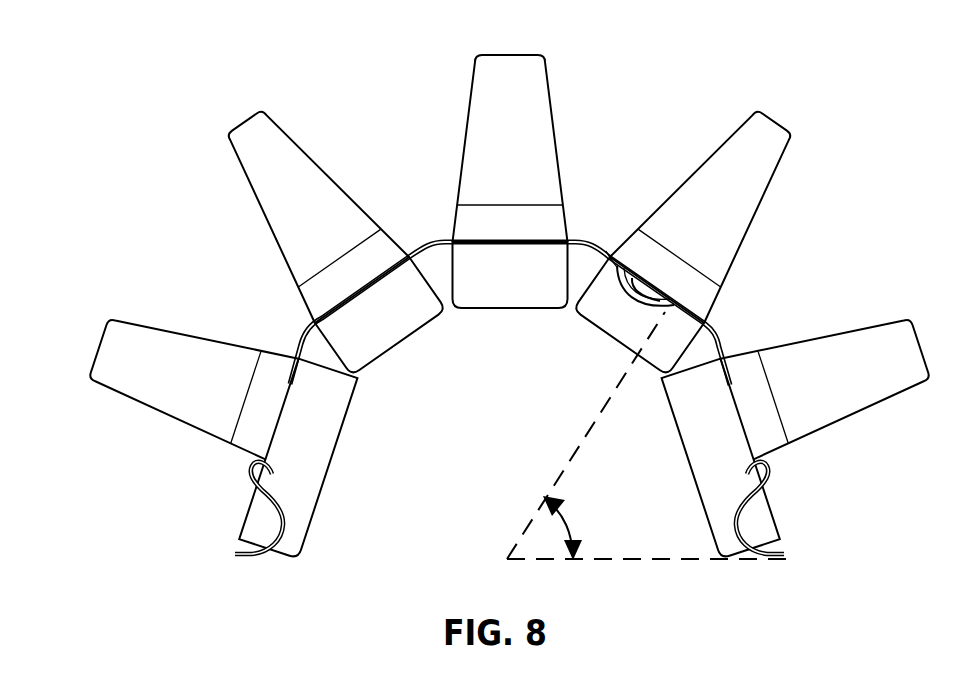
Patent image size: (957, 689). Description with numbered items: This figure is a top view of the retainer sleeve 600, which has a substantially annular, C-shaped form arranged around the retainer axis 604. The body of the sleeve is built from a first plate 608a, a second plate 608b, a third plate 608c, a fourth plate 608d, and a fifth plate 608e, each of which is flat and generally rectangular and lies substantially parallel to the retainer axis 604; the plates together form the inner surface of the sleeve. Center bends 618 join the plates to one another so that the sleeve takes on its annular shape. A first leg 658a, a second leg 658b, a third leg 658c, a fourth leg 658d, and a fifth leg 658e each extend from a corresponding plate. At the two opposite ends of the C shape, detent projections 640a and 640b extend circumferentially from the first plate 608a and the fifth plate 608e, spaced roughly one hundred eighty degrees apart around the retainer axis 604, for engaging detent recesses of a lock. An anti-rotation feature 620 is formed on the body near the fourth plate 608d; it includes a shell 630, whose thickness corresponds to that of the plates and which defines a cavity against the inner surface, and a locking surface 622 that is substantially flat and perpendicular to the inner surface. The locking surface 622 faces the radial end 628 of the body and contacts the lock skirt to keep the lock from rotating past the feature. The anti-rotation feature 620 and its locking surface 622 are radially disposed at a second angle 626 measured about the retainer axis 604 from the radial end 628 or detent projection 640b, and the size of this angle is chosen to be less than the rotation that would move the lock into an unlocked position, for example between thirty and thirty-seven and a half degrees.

The retainer sleeve 600 is at (186, 90).
The retainer axis 604 is at (506, 559).
The first plate 608a is at (282, 412).
The second plate 608b is at (367, 293).
The third plate 608c is at (498, 246).
The fourth plate 608d is at (650, 373).
The fifth plate 608e is at (740, 413).
The center bend 618 is at (295, 334).
The anti-rotation feature 620 is at (623, 294).
The locking surface 622 is at (688, 300).
The second angle 626 is at (568, 526).
The radial end 628 is at (783, 563).
The shell 630 is at (618, 268).
The detent projection 640a is at (247, 560).
The detent projection 640b is at (768, 545).
The first leg 658a is at (173, 340).
The second leg 658b is at (318, 173).
The third leg 658c is at (552, 122).
The fourth leg 658d is at (742, 209).
The fifth leg 658e is at (866, 401).